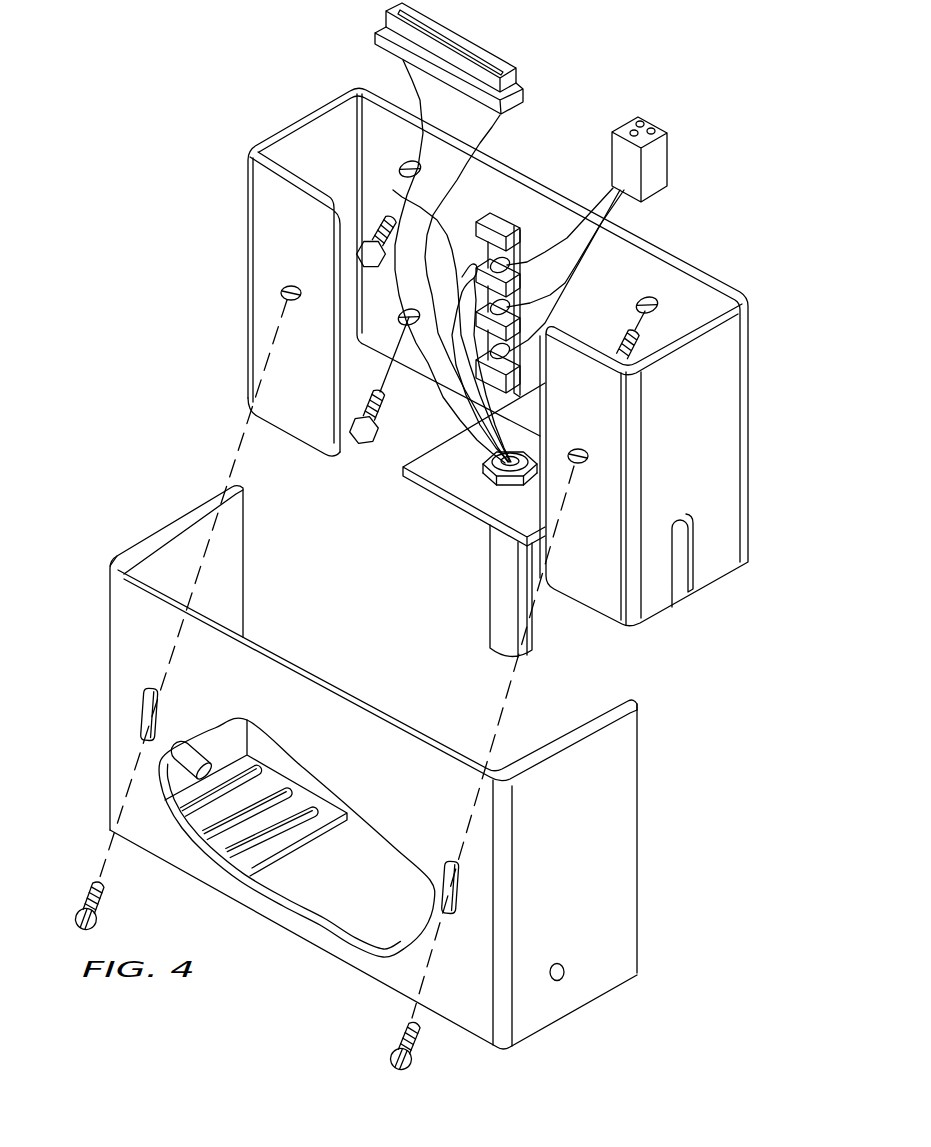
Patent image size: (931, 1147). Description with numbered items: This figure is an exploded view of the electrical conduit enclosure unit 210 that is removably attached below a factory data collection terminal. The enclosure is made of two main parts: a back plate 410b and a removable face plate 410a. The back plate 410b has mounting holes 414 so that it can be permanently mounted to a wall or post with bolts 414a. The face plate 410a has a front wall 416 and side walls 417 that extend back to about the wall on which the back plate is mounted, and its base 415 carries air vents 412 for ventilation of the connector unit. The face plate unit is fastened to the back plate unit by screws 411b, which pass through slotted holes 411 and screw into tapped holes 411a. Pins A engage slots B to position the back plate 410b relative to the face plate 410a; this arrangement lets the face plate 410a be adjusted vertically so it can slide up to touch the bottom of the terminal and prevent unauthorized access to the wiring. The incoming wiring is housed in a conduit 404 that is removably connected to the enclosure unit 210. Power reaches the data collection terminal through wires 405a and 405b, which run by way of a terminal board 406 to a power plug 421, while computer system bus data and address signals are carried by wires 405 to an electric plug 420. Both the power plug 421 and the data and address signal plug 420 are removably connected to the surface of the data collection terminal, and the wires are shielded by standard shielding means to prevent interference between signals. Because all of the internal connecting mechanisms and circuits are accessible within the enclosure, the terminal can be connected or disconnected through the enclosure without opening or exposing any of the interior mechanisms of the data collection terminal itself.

The electrical enclosure unit 210 is at (340, 600).
The conduit 404 is at (490, 588).
The wires 405 is at (393, 190).
The wire 405a is at (568, 238).
The wire 405b is at (464, 275).
The terminal board 406 is at (505, 218).
The face plate 410a is at (638, 861).
The back plate 410b is at (295, 121).
The slotted holes 411 is at (162, 704).
The tapped holes 411a is at (295, 292).
The screws 411b is at (80, 897).
The air vents 412 is at (308, 811).
The mounting holes 414 is at (392, 216).
The bolts 414a is at (372, 239).
The base 415 is at (315, 820).
The front wall 416 is at (328, 700).
The side walls 417 is at (164, 528).
The electric plug 420 is at (470, 38).
The power plug 421 is at (664, 136).
The pins A is at (178, 768).
The slots B is at (678, 552).